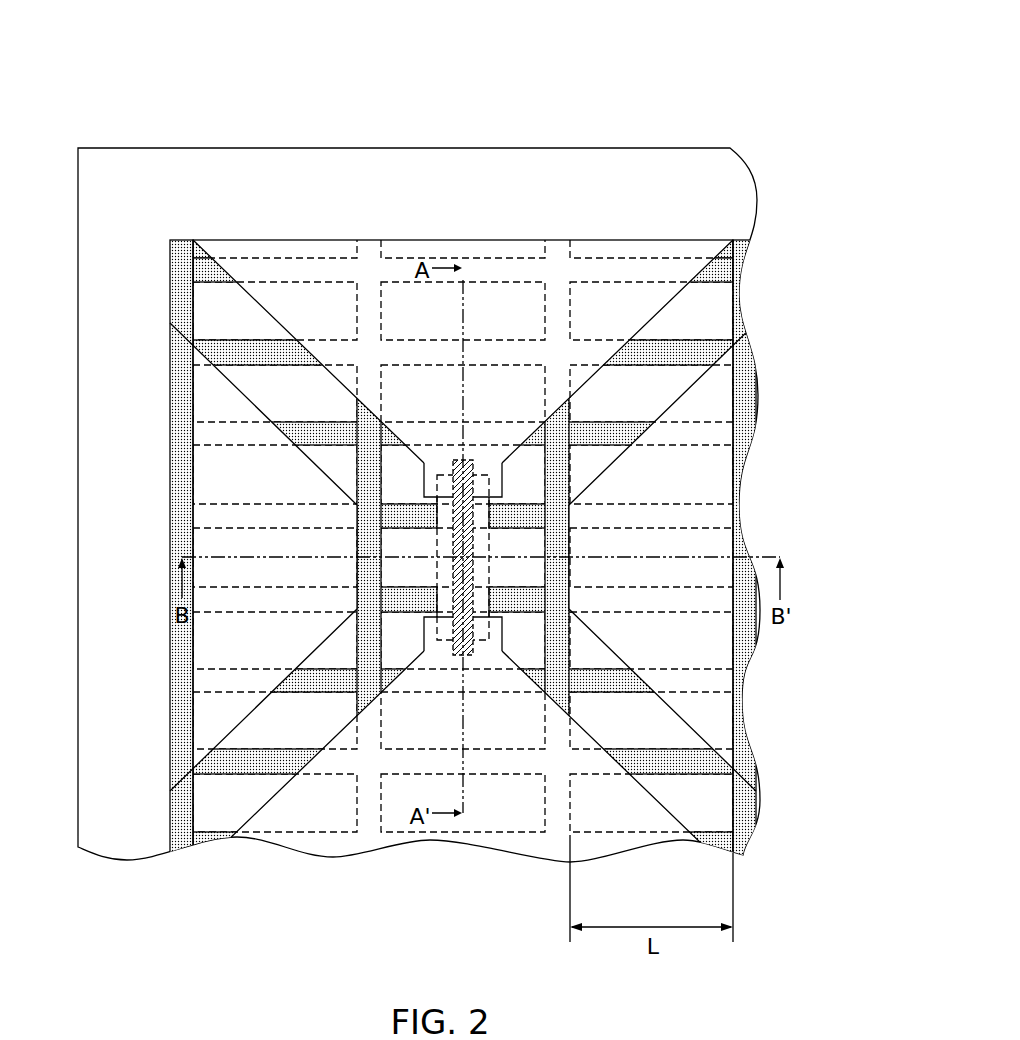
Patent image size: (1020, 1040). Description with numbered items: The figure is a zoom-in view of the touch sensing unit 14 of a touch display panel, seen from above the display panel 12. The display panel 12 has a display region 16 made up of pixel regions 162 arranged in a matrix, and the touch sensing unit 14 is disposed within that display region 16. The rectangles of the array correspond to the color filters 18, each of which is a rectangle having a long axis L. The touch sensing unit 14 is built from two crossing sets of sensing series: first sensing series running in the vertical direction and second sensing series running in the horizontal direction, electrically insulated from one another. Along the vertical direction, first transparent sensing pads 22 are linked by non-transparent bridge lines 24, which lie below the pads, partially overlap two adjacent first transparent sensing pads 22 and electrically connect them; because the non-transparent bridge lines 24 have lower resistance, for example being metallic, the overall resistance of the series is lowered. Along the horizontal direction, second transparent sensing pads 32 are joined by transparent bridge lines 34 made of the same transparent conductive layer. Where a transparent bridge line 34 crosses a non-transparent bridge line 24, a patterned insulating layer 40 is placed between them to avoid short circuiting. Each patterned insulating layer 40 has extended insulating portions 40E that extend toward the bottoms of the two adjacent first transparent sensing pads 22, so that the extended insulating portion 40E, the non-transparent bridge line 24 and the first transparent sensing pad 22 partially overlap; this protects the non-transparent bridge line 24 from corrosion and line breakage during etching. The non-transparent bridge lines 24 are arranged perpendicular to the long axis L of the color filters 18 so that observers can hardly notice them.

The display panel 12 is at (638, 147).
The touch sensing unit 14 is at (677, 108).
The display region 16 is at (556, 240).
The pixel region 162 is at (496, 432).
The color filter 18 is at (207, 308).
The first transparent sensing pad 22 is at (367, 257).
The non-transparent bridge line 24 is at (453, 633).
The second transparent sensing pad 32 is at (185, 435).
The transparent bridge line 34 is at (375, 525).
The patterned insulating layer 40 is at (488, 542).
The extended insulating portion 40E is at (488, 475).